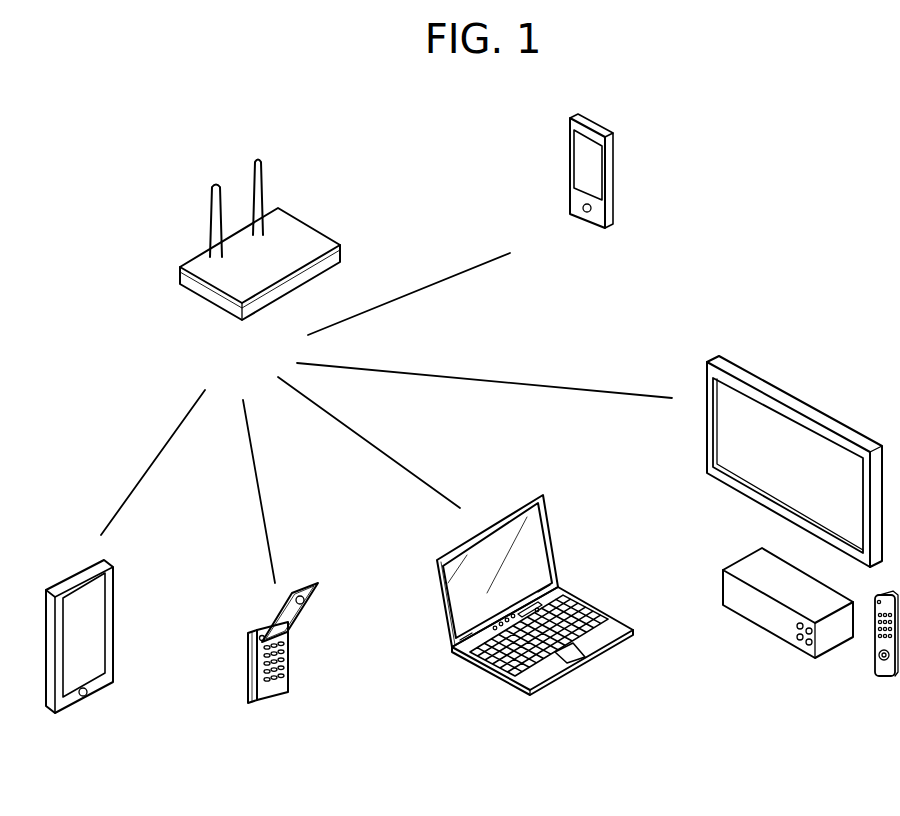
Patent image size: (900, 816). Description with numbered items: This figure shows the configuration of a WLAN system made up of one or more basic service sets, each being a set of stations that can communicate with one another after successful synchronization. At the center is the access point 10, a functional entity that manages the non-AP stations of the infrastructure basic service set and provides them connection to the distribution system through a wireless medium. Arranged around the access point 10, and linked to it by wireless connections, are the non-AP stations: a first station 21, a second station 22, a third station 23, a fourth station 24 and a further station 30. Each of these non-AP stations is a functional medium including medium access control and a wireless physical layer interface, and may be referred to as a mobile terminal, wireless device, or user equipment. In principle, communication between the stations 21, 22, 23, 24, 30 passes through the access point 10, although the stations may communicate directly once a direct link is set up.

The access point (AP) 10 is at (260, 275).
The non-AP station STA1 21 is at (76, 671).
The non-AP station STA2 22 is at (279, 682).
The non-AP station STA3 23 is at (535, 627).
The non-AP station STA4 24 is at (802, 540).
The non-AP station STAa 30 is at (586, 204).